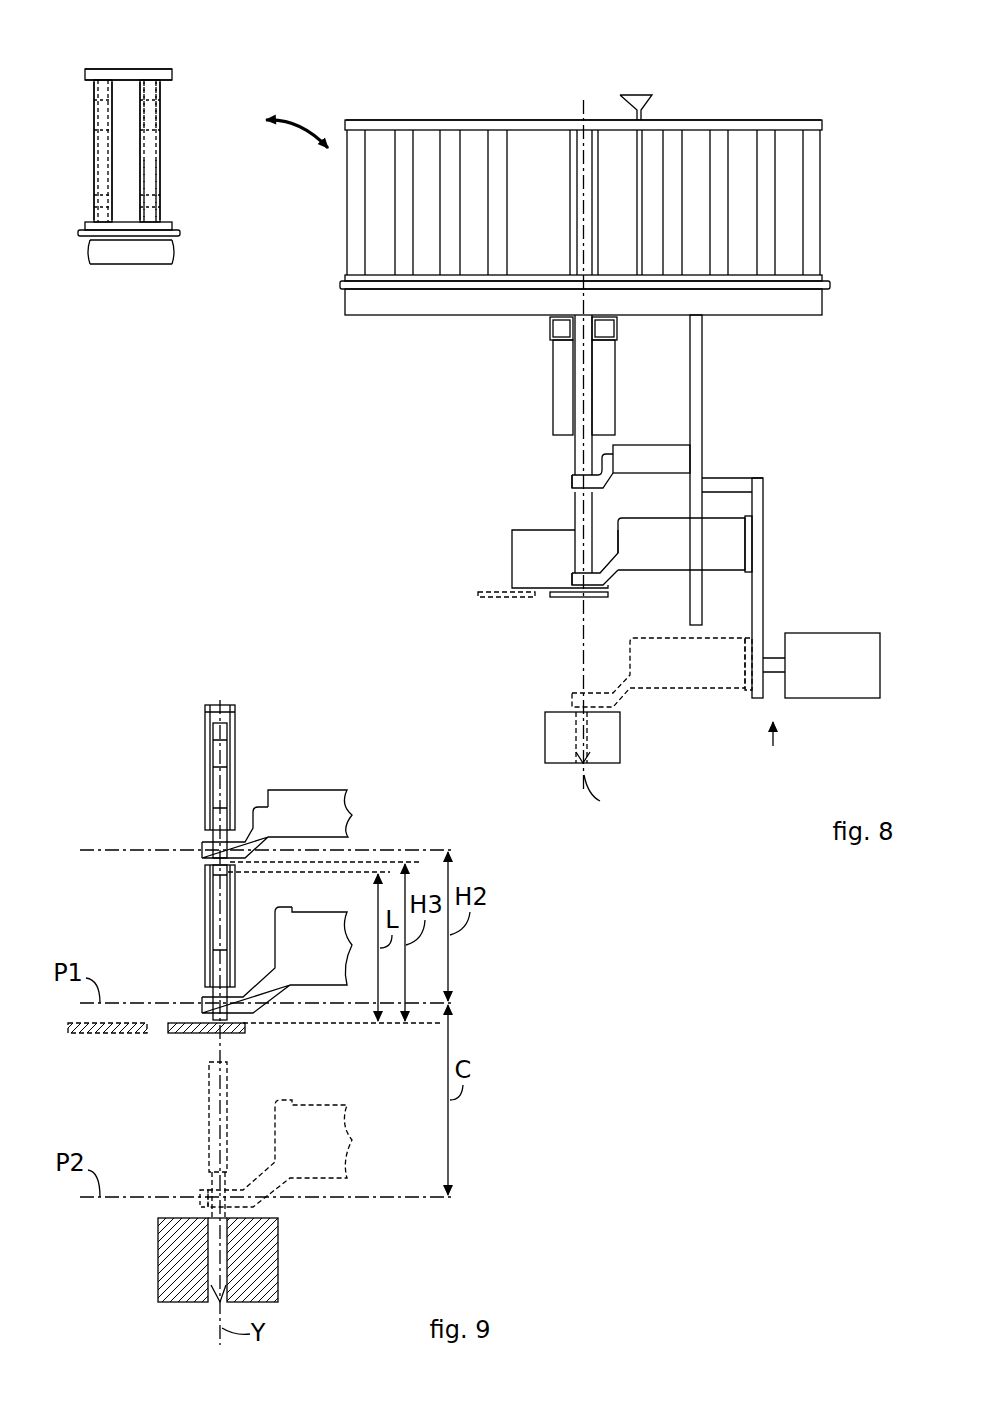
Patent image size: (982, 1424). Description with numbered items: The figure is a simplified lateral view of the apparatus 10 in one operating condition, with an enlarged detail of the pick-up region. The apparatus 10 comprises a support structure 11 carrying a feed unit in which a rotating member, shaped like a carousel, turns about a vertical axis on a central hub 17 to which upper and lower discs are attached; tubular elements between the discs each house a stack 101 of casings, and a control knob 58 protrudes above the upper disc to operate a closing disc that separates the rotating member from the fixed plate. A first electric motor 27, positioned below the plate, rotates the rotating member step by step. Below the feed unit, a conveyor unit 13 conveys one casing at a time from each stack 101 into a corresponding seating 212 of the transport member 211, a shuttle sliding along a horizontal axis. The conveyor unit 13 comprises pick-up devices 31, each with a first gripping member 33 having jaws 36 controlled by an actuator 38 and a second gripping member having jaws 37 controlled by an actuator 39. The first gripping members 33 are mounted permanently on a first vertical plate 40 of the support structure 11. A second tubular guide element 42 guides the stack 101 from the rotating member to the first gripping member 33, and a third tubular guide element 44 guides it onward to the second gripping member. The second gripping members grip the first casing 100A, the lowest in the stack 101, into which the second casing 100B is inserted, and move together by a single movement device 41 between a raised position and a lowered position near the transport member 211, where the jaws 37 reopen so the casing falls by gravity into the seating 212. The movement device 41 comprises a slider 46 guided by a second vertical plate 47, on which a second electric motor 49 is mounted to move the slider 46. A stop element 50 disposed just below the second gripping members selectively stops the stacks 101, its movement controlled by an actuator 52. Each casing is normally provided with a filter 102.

In FIG. 8, the apparatus 10 is at (845, 78).
In FIG. 8, the support structure 11 is at (706, 437).
In FIG. 8, the conveyor unit 13 is at (453, 479).
In FIG. 9, the conveyor unit 13 is at (114, 931).
In FIG. 8, the central hub 17 is at (600, 148).
In FIG. 8, the first electric motor 27 is at (562, 385).
In FIG. 8, the pick-up device 31 is at (484, 426).
In FIG. 9, the pick-up device 31 is at (274, 748).
In FIG. 8, the first gripping member 33 is at (571, 473).
In FIG. 9, the first gripping member 33 is at (200, 846).
In FIG. 8, the jaws 36 is at (570, 482).
In FIG. 9, the jaws 36 is at (205, 862).
In FIG. 8, the jaws 37 is at (572, 578).
In FIG. 9, the jaws 37 is at (205, 1010).
In FIG. 8, the actuator 38 is at (628, 450).
In FIG. 9, the actuator 38 is at (283, 798).
In FIG. 8, the actuator 39 is at (640, 528).
In FIG. 9, the actuator 39 is at (315, 920).
In FIG. 8, the first vertical plate 40 is at (698, 378).
In FIG. 8, the movement device 41 is at (776, 749).
In FIG. 8, the second tubular guide element 42 is at (573, 430).
In FIG. 9, the second tubular guide element 42 is at (210, 735).
In FIG. 8, the third tubular guide element 44 is at (575, 510).
In FIG. 9, the third tubular guide element 44 is at (207, 935).
In FIG. 8, the slider 46 is at (748, 572).
In FIG. 8, the second vertical plate 47 is at (762, 595).
In FIG. 8, the second electric motor 49 is at (820, 688).
In FIG. 8, the stop element 50 is at (488, 598).
In FIG. 9, the stop element 50 is at (78, 1035).
In FIG. 8, the actuator 52 is at (516, 540).
In FIG. 8, the control knob 58 is at (645, 98).
In FIG. 8, the first casing 100A is at (150, 190).
In FIG. 9, the first casing 100A is at (232, 898).
In FIG. 8, the second casing 100B is at (150, 113).
In FIG. 9, the second casing 100B is at (215, 800).
In FIG. 8, the stack 101 is at (96, 115).
In FIG. 9, the filter 102 is at (228, 1178).
In FIG. 8, the transport member 211 is at (545, 735).
In FIG. 9, the transport member 211 is at (158, 1257).
In FIG. 8, the seatings 212 is at (578, 766).
In FIG. 9, the seatings 212 is at (210, 1292).